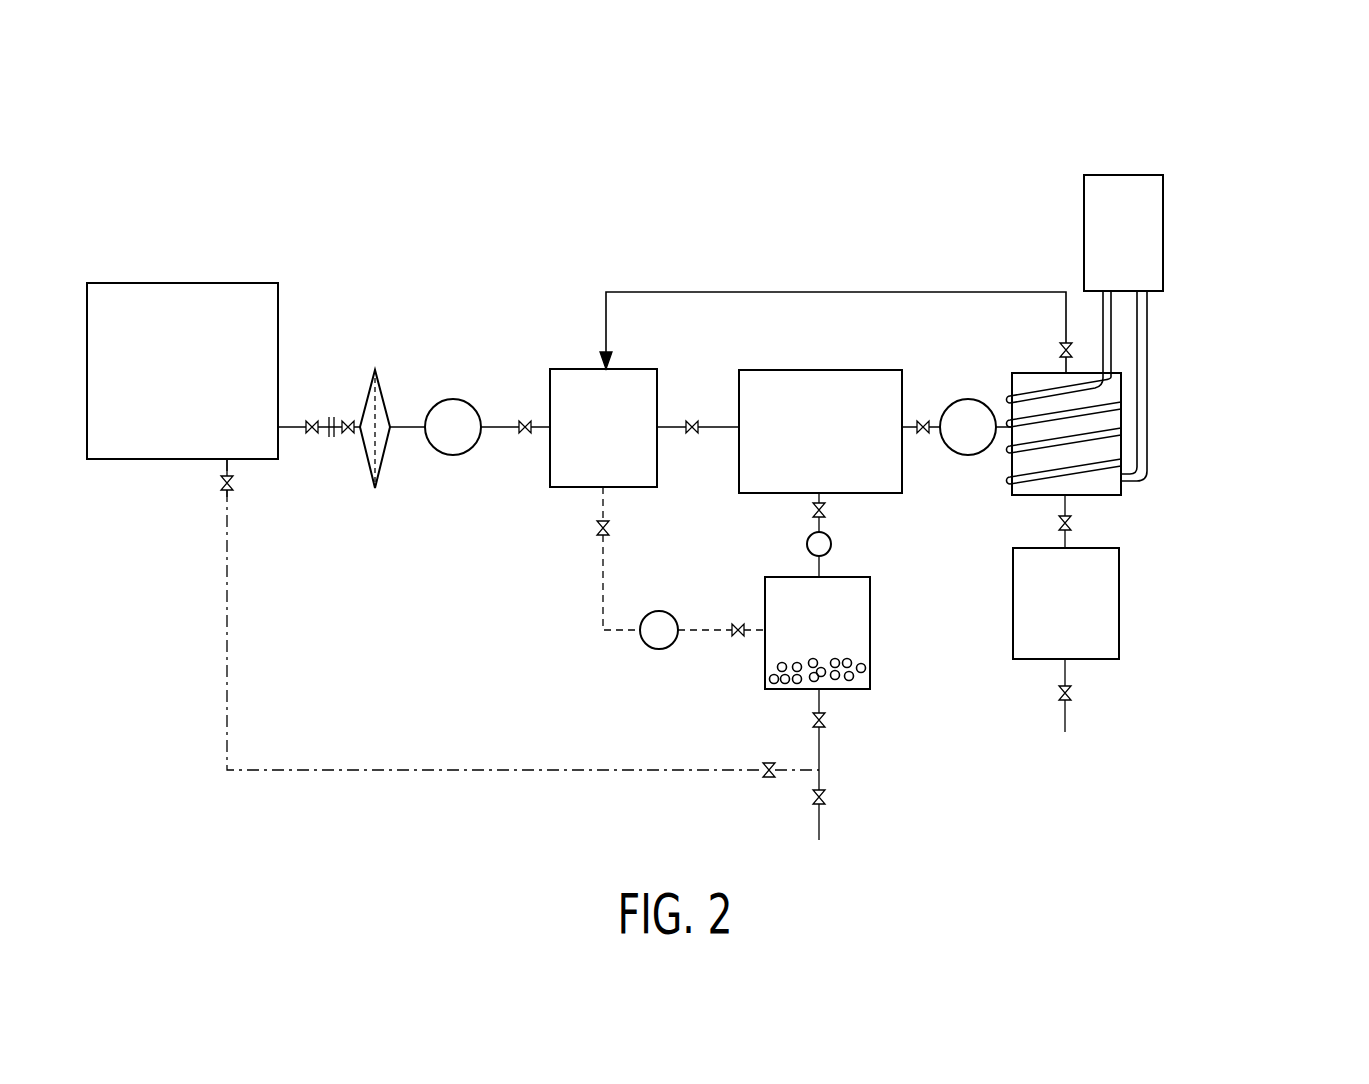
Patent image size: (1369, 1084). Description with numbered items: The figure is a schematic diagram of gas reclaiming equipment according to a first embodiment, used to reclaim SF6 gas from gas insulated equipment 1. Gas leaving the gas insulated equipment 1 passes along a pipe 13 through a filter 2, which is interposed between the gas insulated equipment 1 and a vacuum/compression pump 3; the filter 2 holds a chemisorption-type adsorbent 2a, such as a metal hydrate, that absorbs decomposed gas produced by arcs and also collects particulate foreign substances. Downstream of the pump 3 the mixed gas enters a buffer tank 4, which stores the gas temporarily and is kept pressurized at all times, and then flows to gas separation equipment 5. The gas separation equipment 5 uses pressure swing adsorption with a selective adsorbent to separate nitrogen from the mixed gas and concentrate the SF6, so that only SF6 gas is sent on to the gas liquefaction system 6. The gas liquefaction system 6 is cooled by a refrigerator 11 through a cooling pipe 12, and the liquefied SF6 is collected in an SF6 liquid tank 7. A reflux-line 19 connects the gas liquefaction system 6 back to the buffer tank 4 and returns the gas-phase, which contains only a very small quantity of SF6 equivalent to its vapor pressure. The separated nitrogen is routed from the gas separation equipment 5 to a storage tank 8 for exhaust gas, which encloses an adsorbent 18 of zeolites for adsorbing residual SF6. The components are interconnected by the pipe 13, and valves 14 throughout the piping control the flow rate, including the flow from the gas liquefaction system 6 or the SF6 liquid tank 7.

The gas insulated equipment 1 is at (144, 283).
The filter 2 is at (385, 382).
The adsorbent 2a is at (386, 398).
The vacuum/compression pump 3 is at (453, 399).
The buffer tank 4 is at (624, 369).
The gas separation equipment 5 is at (815, 370).
The gas liquefaction system 6 is at (1177, 484).
The SF6 liquid tank 7 is at (1108, 597).
The storage tank 8 is at (855, 637).
The refrigerator 11 is at (1118, 187).
The cooling pipe 12 is at (1150, 348).
The pipe 13 is at (496, 427).
The valve 14 is at (527, 440).
The adsorbent 18 is at (857, 690).
The reflux-line 19 is at (851, 291).